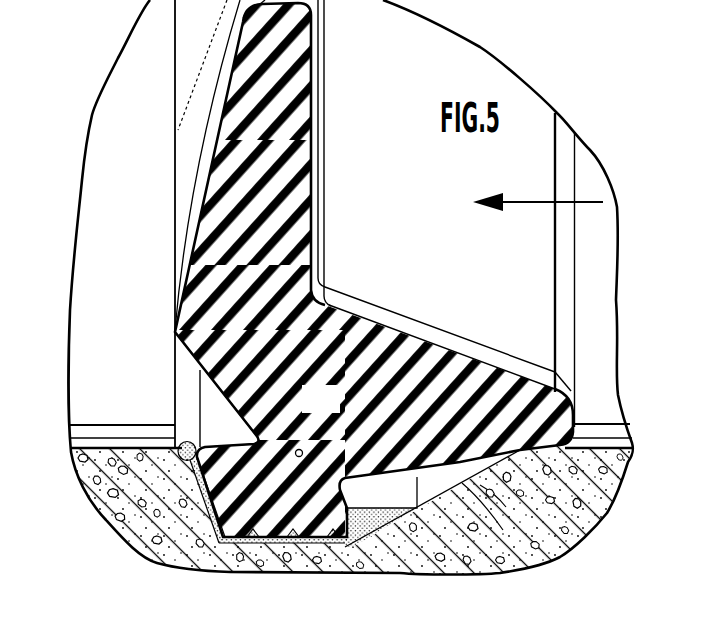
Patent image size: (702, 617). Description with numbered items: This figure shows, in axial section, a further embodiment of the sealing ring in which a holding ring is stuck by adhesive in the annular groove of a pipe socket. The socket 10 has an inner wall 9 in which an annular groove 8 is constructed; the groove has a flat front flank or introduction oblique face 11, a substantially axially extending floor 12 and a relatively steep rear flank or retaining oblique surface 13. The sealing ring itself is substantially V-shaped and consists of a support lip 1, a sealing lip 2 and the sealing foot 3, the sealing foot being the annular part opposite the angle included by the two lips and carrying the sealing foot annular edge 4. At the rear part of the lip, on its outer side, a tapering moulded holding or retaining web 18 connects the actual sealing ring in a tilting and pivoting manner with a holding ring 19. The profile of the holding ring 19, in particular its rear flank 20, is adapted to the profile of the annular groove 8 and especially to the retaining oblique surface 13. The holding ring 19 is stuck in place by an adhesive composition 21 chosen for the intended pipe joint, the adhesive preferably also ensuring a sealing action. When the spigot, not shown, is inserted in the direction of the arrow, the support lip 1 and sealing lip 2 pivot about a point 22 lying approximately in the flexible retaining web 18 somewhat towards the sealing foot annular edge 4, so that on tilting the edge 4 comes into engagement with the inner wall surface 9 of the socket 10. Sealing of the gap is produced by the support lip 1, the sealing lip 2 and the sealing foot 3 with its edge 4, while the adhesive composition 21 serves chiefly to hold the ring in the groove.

The support lip 1 is at (423, 370).
The sealing lip 2 is at (297, 135).
The sealing foot 3 is at (203, 300).
The sealing foot annular edge 4 is at (175, 332).
The annular groove 8 is at (423, 487).
The inner wall 9 is at (92, 448).
The socket 10 is at (597, 513).
The introduction oblique face 11 is at (351, 510).
The floor 12 is at (327, 563).
The retaining oblique surface 13 is at (203, 480).
The retaining web 18 is at (255, 433).
The holding ring 19 is at (223, 530).
The rear flank 20 is at (193, 487).
The adhesive composition 21 is at (183, 445).
The point 22 is at (300, 452).